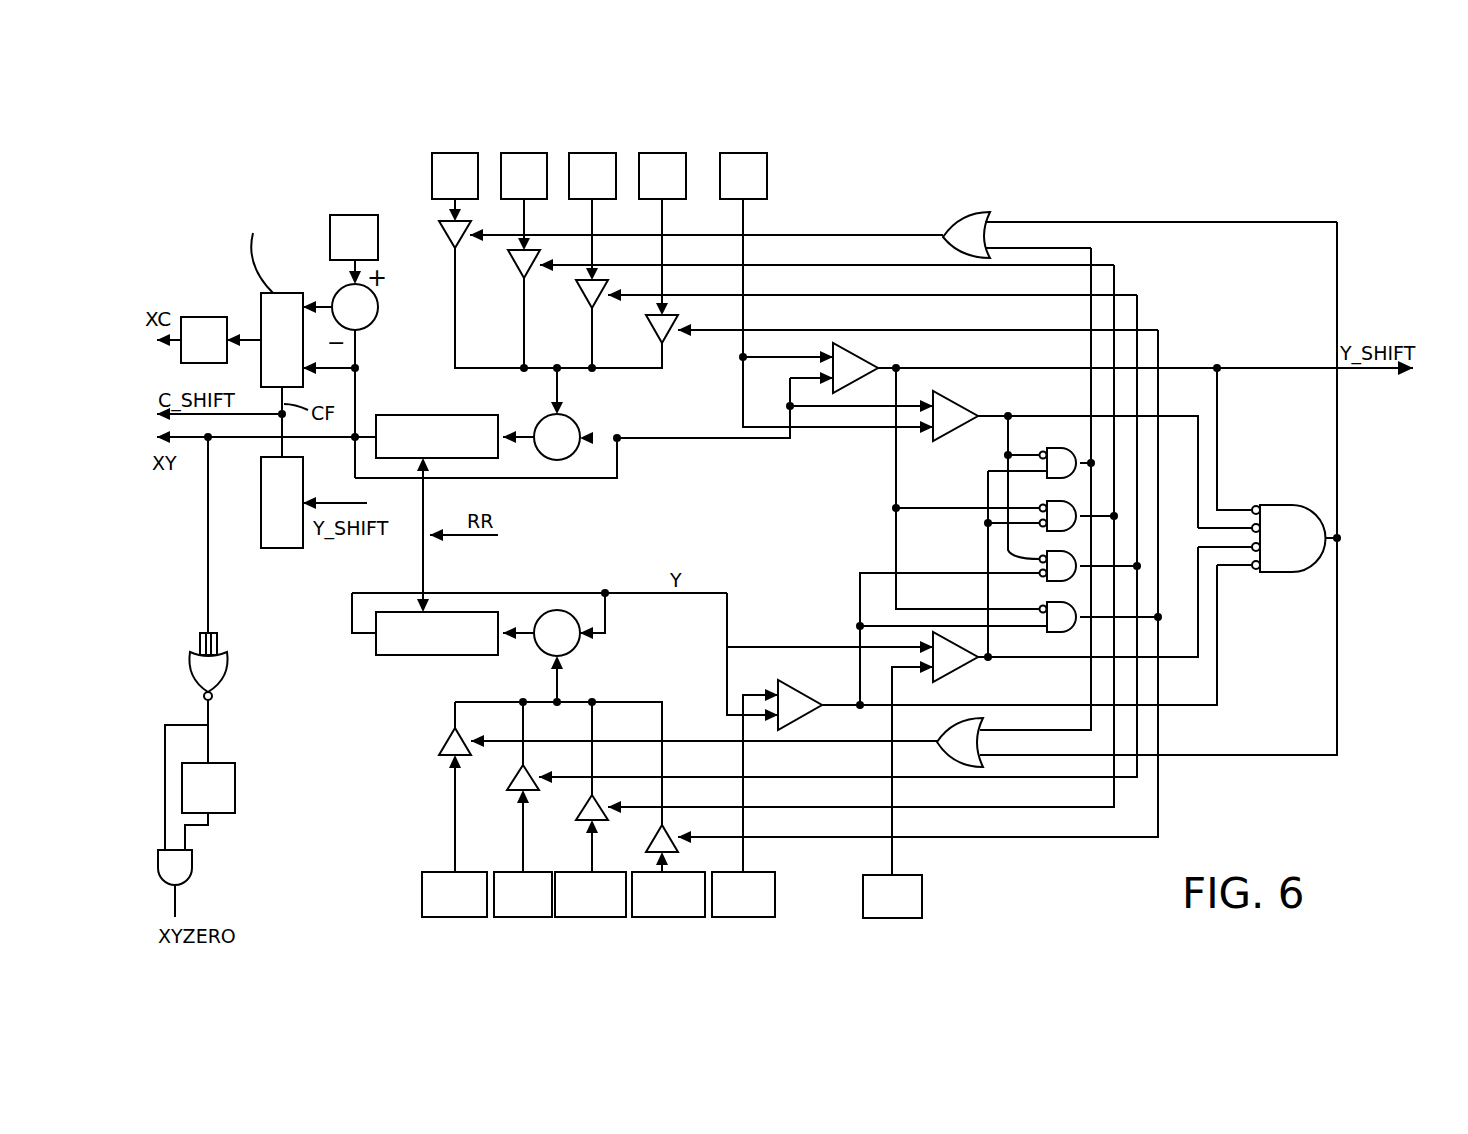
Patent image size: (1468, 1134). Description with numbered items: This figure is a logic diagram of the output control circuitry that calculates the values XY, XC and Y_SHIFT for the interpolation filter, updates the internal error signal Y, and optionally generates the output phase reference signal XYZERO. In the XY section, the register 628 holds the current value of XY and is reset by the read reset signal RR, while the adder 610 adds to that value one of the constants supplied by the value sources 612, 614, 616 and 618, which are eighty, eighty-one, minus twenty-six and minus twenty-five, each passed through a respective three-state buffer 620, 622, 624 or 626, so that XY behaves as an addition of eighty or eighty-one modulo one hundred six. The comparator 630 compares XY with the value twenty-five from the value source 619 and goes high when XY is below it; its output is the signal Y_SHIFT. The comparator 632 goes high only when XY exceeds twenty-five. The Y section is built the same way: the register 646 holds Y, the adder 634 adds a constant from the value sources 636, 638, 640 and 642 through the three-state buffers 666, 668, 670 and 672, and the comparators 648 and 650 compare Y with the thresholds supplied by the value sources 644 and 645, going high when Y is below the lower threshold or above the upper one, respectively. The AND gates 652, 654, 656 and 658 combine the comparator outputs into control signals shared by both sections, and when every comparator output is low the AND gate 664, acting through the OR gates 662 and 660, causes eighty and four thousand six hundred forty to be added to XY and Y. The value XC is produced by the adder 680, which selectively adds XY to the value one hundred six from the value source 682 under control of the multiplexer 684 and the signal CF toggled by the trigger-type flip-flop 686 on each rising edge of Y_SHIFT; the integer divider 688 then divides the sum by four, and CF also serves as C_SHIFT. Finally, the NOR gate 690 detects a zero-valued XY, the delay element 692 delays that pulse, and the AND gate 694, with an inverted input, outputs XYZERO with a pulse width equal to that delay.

The adder 610 is at (578, 421).
The value source 612 is at (440, 153).
The value source 614 is at (505, 153).
The value source 616 is at (575, 153).
The value source 618 is at (647, 153).
The value source 619 is at (726, 153).
The three-state buffer 620 is at (440, 228).
The three-state buffer 622 is at (510, 262).
The three-state buffer 624 is at (578, 292).
The three-state buffer 626 is at (648, 325).
The register 628 is at (467, 423).
The comparator 630 is at (860, 362).
The comparator 632 is at (955, 406).
The adder 634 is at (578, 652).
The value source 636 is at (440, 917).
The value source 638 is at (507, 917).
The value source 640 is at (580, 917).
The value source 642 is at (650, 917).
The value source 644 is at (748, 917).
The value source 645 is at (863, 890).
The register 646 is at (420, 657).
The comparator 648 is at (805, 692).
The comparator 650 is at (950, 675).
The AND gate 652 is at (1045, 468).
The AND gate 654 is at (1055, 505).
The AND gate 656 is at (1055, 565).
The AND gate 658 is at (1065, 612).
The OR gate 660 is at (960, 729).
The OR gate 662 is at (948, 222).
The AND gate 664 is at (1283, 507).
The three-state buffer 666 is at (446, 745).
The three-state buffer 668 is at (514, 780).
The three-state buffer 670 is at (582, 810).
The three-state buffer 672 is at (652, 840).
The adder 680 is at (370, 326).
The value source 682 is at (343, 215).
The multiplexer 684 is at (282, 293).
The trigger-type flip-flop 686 is at (280, 548).
The integer divider 688 is at (200, 317).
The NOR gate 690 is at (213, 670).
The delay element 692 is at (235, 791).
The AND gate 694 is at (188, 866).